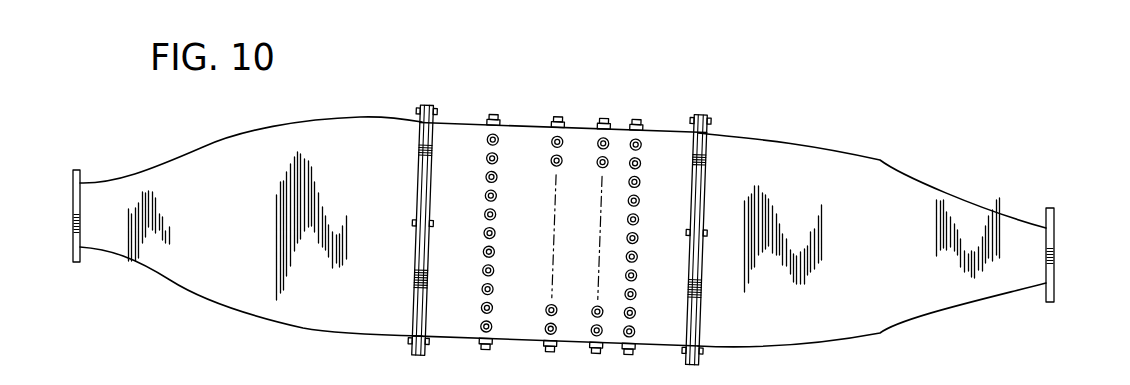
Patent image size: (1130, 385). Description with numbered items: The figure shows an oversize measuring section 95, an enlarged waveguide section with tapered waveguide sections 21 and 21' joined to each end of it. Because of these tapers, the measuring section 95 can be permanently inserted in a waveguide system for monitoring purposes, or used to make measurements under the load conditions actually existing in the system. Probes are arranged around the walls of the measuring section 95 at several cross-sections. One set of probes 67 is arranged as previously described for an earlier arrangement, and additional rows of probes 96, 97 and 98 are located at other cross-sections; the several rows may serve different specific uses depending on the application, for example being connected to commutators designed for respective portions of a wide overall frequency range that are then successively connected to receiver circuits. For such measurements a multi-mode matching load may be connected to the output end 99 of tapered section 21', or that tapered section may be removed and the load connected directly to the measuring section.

The tapered waveguide section 21 is at (247, 216).
The tapered waveguide section 21' is at (872, 228).
The oversize measuring section 95 is at (460, 146).
The probes 67 is at (497, 143).
The row of probes 96 is at (560, 144).
The row of probes 97 is at (607, 146).
The row of probes 98 is at (641, 145).
The output end 99 is at (1056, 230).